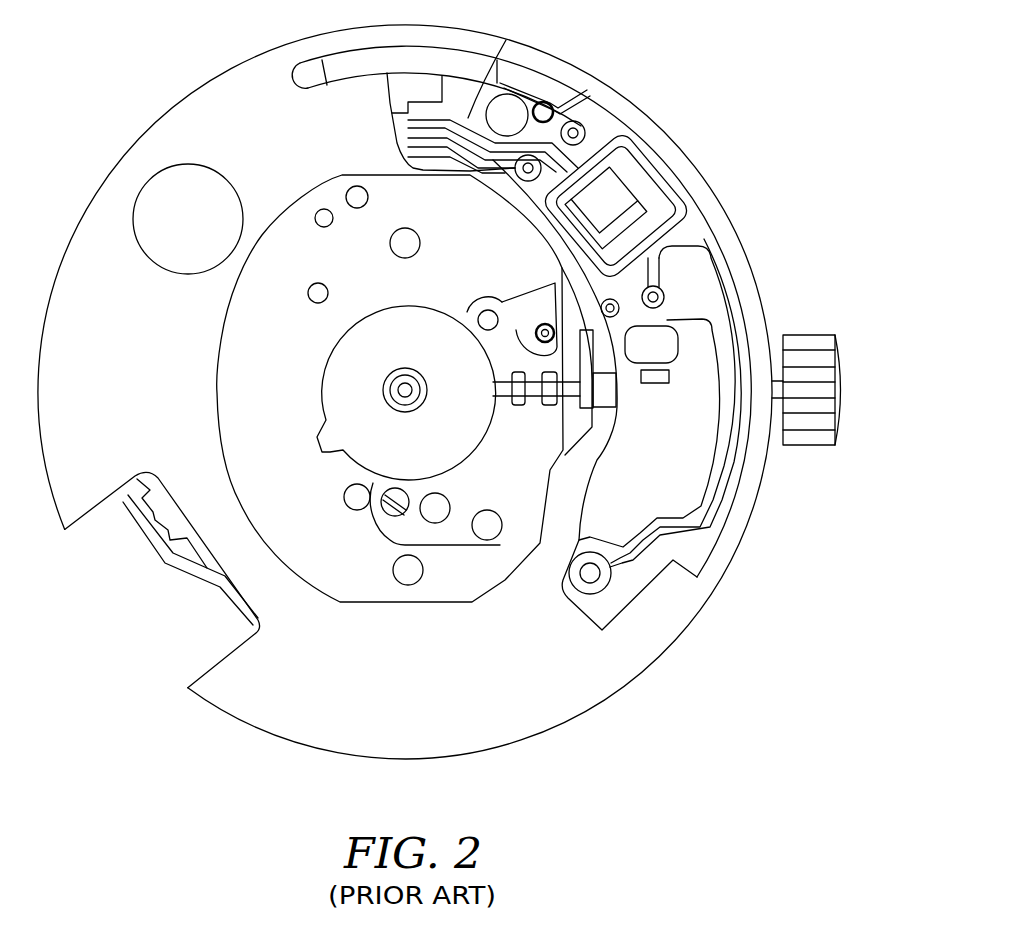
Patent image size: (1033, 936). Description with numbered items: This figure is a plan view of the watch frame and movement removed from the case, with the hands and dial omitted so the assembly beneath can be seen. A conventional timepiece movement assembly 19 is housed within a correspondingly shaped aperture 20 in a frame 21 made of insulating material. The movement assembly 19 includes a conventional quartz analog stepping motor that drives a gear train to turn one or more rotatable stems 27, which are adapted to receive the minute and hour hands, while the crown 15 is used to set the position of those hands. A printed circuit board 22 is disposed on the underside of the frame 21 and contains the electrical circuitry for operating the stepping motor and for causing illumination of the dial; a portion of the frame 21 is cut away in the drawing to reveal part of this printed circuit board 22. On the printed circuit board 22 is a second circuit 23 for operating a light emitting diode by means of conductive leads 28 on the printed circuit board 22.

The crown 15 is at (840, 393).
The timepiece movement assembly 19 is at (322, 538).
The aperture 20 is at (218, 393).
The frame 21 is at (144, 361).
The printed circuit board 22 is at (700, 288).
The second circuit 23 is at (625, 195).
The rotatable stems 27 is at (402, 380).
The conductive leads 28 is at (508, 37).